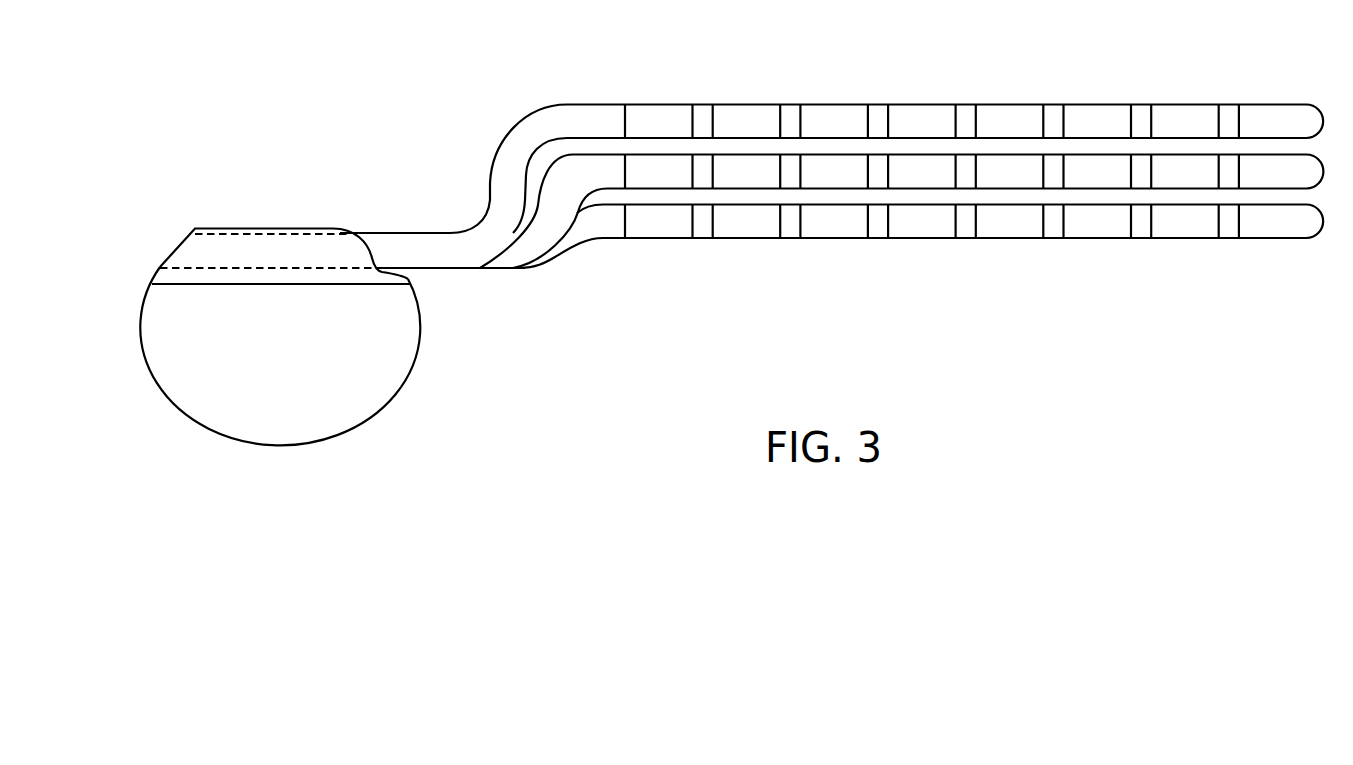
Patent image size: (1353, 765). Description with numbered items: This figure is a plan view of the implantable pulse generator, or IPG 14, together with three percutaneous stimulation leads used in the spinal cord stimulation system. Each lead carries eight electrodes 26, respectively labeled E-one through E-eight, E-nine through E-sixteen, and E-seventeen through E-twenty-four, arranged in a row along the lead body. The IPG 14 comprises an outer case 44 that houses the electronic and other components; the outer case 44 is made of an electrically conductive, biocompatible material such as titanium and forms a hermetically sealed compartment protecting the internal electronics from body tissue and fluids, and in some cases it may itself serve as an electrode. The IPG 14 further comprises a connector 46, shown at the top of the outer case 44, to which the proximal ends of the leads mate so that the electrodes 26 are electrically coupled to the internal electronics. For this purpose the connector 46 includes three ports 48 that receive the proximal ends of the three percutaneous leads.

The implantable pulse generator (IPG) 14 is at (190, 179).
The electrodes 26 is at (835, 103).
The outer case 44 is at (407, 338).
The connector 46 is at (220, 229).
The ports 48 is at (291, 235).